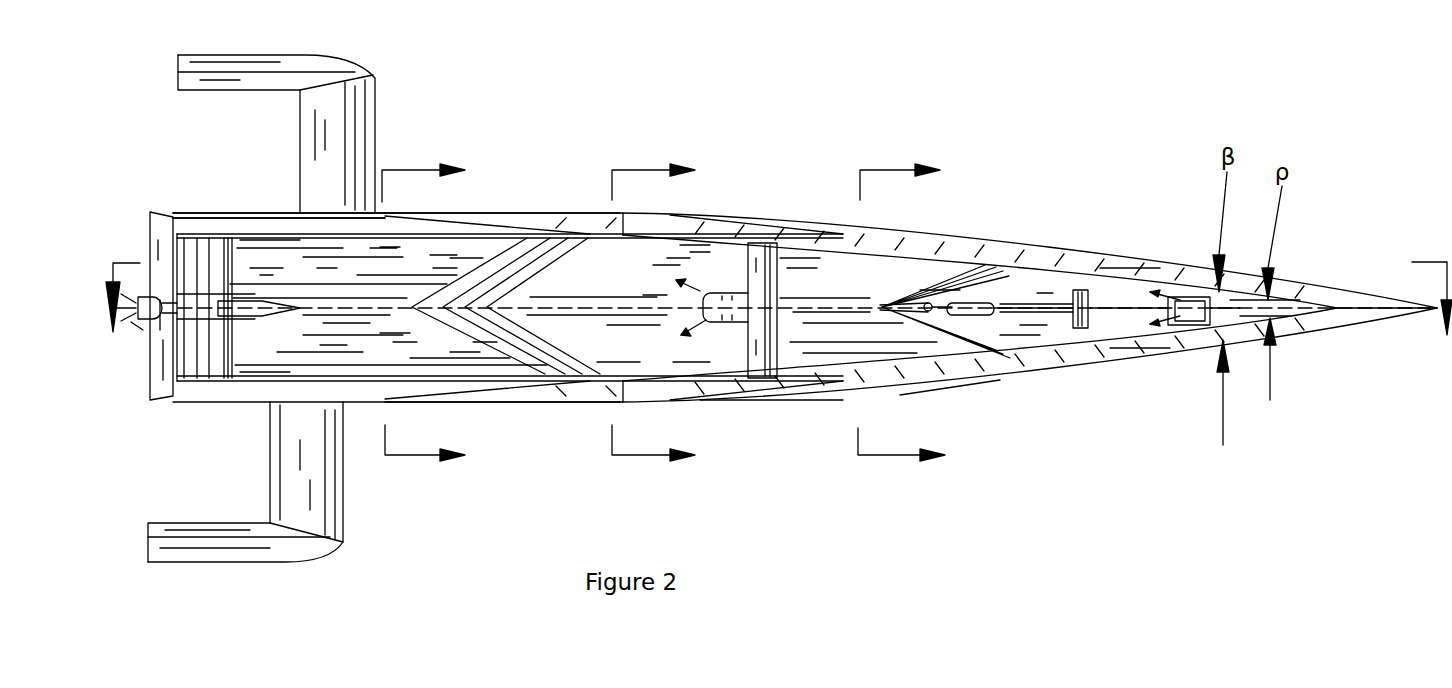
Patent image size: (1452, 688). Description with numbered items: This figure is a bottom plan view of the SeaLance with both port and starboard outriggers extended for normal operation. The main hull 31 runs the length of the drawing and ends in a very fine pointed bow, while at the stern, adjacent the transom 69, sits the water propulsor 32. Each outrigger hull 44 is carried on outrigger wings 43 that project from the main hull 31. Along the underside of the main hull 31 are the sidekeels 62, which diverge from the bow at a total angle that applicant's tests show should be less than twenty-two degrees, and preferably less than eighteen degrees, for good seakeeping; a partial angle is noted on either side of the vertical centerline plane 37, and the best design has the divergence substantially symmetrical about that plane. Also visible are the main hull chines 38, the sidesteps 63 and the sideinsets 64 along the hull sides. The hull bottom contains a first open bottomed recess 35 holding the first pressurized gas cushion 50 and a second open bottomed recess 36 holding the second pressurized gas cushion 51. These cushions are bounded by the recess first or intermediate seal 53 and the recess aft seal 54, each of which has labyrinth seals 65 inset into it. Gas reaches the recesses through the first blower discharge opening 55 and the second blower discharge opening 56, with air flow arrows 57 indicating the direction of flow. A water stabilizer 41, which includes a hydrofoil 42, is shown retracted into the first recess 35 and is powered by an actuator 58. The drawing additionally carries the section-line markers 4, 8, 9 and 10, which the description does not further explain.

The section line 4- 4 is at (779, 278).
The section line 8- 8 is at (901, 292).
The section line 9- 9 is at (653, 295).
The section line 10- 10 is at (423, 291).
The main hull 31 is at (1137, 260).
The water propulsor 32 is at (145, 318).
The first open bottomed recess 35 is at (1000, 293).
The second open bottomed recess 36 is at (626, 290).
The vertical centerline plane 37 is at (850, 307).
The main hull chines 38 is at (788, 223).
The water stabilizer 41 is at (1060, 302).
The hydrofoil 42 is at (1107, 355).
The outrigger wings 43 is at (320, 150).
The outrigger hull 44 is at (247, 90).
The first pressurized gas cushion 50 is at (1060, 370).
The second pressurized gas cushion 51 is at (634, 350).
The recess first or intermediate seal 53 is at (847, 343).
The recess aft seal 54 is at (418, 267).
The first blower discharge opening 55 is at (1193, 350).
The second blower discharge opening 56 is at (738, 292).
The air flow arrows 57 is at (1168, 330).
The actuator 58 is at (981, 315).
The sidekeels 62 is at (1093, 275).
The sidesteps 63 is at (513, 227).
The sideinsets 64 is at (290, 217).
The labyrinth seals 65 is at (228, 330).
The transom 69 is at (158, 235).